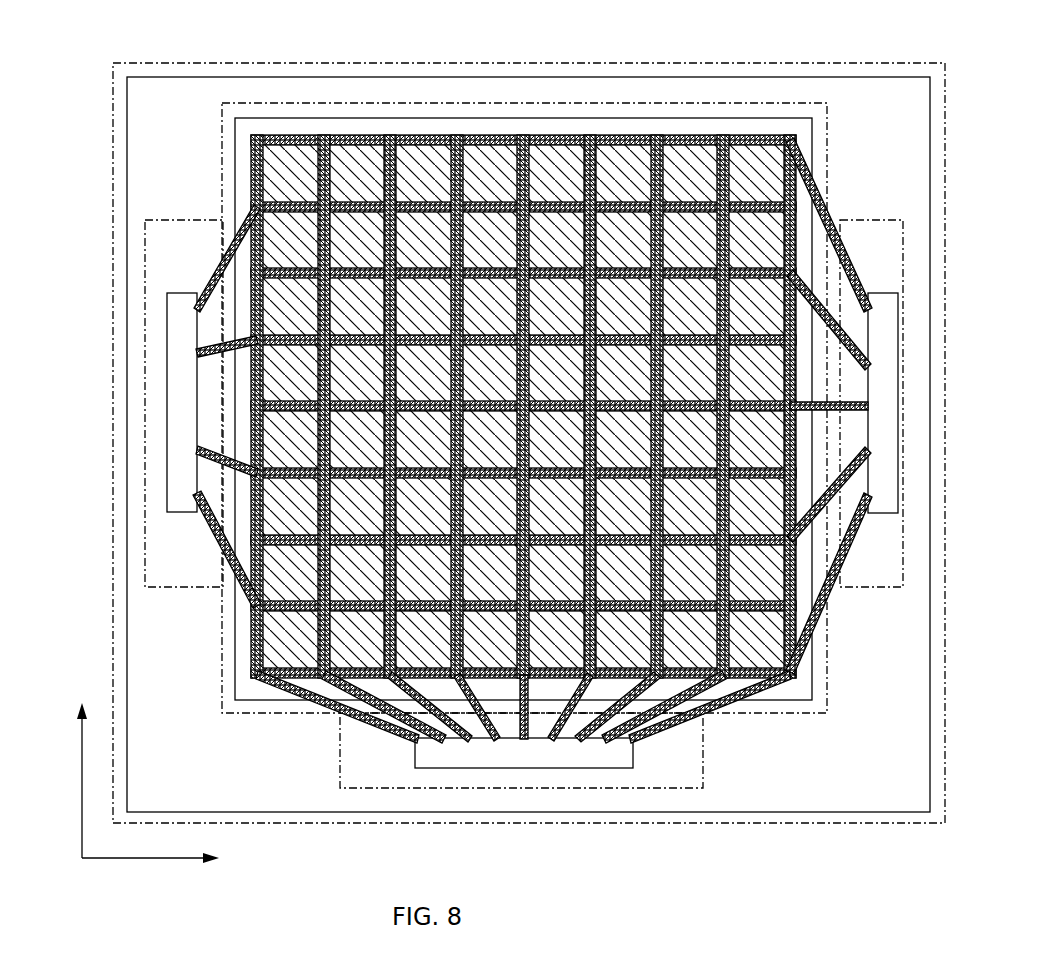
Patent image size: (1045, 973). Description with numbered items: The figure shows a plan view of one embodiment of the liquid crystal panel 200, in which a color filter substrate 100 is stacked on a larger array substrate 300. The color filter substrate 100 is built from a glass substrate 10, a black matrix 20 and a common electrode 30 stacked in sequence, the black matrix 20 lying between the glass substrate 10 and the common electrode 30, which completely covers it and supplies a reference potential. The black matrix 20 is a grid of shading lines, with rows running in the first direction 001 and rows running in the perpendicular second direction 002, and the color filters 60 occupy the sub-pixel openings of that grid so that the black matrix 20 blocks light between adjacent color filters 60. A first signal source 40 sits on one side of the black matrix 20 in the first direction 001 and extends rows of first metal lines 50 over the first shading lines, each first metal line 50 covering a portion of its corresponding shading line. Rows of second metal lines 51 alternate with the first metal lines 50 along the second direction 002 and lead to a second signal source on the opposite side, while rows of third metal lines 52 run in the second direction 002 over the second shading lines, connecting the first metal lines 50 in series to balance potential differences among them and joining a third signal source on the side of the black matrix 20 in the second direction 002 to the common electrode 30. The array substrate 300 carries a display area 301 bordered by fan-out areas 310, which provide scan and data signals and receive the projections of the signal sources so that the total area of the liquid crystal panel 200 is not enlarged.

The liquid crystal panel 200 is at (125, 35).
The color filter substrate 100 is at (486, 421).
The array substrate 300 is at (485, 487).
The glass substrate 10 is at (727, 102).
The black matrix 20 is at (583, 137).
The display area 301 is at (293, 108).
The fan-out area 310 is at (183, 240).
The common electrode 30 is at (783, 692).
The first signal source 40 is at (882, 330).
The first metal lines 50 is at (327, 136).
The second metal lines 51 is at (799, 172).
The third metal lines 52 is at (822, 663).
The color filters 60 is at (410, 172).
The first direction 001 is at (175, 860).
The second direction 002 is at (79, 770).